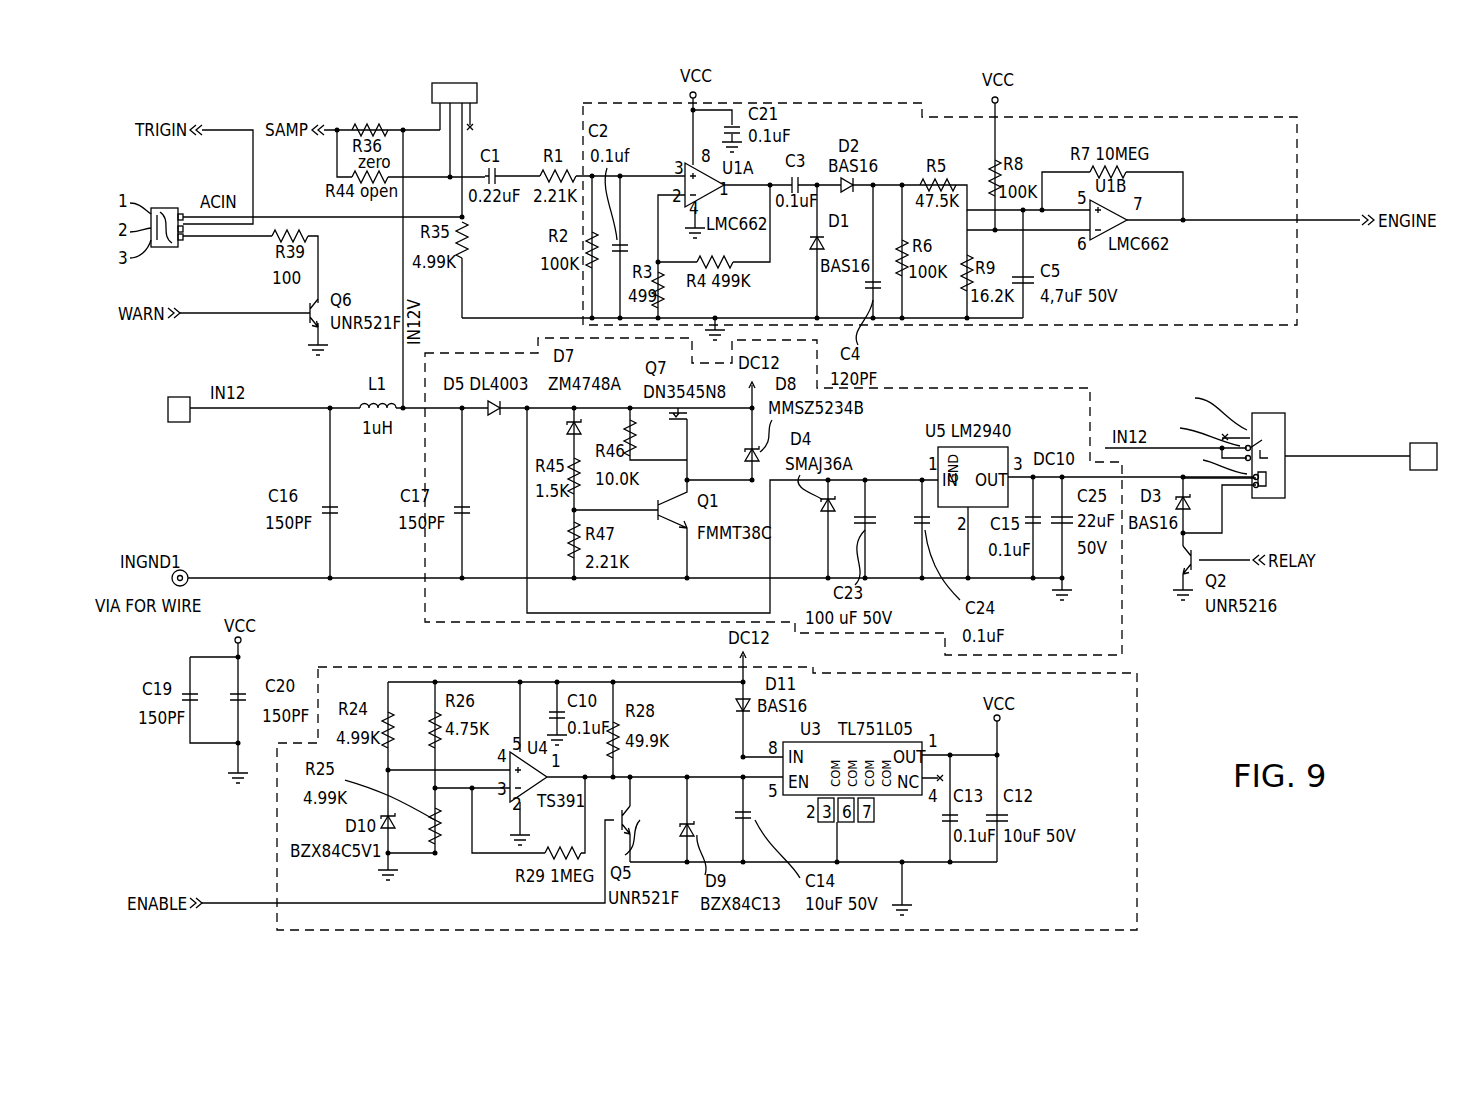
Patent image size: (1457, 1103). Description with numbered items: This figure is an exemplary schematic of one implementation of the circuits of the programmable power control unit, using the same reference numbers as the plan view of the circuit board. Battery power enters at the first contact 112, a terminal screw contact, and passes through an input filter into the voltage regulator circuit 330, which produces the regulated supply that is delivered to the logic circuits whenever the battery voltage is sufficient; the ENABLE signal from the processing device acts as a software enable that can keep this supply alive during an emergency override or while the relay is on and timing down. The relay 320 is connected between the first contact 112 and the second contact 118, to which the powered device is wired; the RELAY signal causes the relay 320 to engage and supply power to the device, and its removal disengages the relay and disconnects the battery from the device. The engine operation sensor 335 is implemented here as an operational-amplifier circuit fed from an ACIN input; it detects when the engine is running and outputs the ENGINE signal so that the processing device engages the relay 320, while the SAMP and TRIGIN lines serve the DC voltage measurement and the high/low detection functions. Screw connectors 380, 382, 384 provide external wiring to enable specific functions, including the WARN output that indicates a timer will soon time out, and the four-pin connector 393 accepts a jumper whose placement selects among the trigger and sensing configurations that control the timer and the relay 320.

The 4 pin connector 393 is at (432, 93).
The screw connector 382 is at (186, 208).
The screw connector 380 is at (183, 229).
The screw connector 384 is at (183, 240).
The first contact 112 is at (180, 396).
The engine operation sensor 335 is at (1258, 157).
The voltage regulator circuit 330 is at (1080, 424).
The relay 320 is at (1280, 412).
The second contact 118 is at (1422, 443).